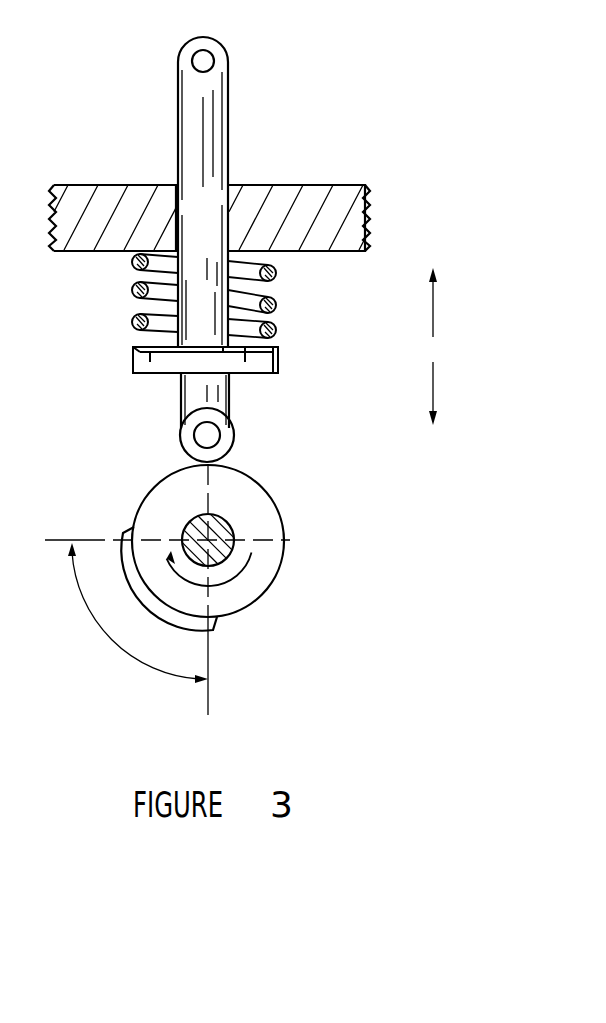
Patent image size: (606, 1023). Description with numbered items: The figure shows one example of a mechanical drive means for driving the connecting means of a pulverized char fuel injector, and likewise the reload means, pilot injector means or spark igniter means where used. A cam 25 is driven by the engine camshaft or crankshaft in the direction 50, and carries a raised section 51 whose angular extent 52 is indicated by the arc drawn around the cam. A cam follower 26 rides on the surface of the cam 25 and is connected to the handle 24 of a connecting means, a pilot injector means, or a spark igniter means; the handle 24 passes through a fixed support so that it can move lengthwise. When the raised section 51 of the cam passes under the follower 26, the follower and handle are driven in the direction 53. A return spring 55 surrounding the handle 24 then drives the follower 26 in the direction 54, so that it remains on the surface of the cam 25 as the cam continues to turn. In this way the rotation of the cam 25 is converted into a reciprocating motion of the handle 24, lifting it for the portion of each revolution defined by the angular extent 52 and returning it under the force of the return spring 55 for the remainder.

The handle 24 is at (200, 60).
The cam 25 is at (280, 572).
The cam follower 26 is at (230, 407).
The direction of cam rotation 50 is at (233, 580).
The raised section 51 is at (183, 633).
The angular extent 52 is at (130, 655).
The direction of follower lift 53 is at (433, 308).
The direction of follower return 54 is at (433, 390).
The return spring 55 is at (277, 302).